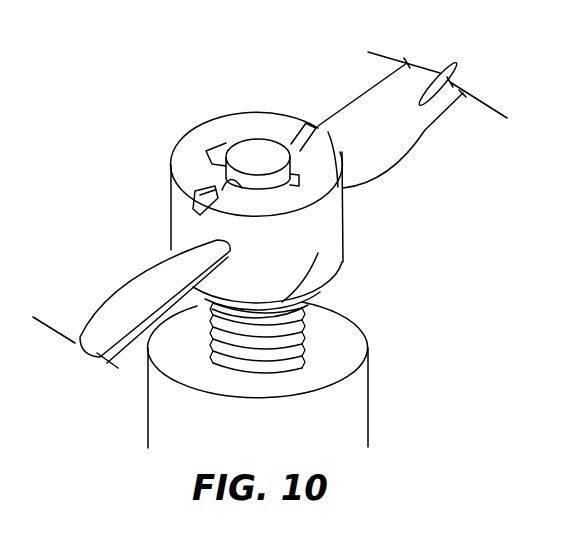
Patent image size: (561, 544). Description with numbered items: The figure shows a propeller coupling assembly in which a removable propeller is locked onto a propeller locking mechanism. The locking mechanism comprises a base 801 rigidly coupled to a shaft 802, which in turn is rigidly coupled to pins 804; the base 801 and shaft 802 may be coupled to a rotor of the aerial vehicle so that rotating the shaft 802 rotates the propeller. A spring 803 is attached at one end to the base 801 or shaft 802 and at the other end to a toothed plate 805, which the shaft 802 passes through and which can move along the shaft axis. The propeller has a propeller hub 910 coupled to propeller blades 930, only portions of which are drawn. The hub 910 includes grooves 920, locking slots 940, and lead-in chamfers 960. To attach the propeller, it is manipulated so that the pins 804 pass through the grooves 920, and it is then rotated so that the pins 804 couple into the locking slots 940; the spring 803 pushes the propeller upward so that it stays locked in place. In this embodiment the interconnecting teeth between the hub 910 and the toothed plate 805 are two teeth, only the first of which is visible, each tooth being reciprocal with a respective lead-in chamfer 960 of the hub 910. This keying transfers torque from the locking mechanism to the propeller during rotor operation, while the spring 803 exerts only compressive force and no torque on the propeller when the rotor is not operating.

The base 801 is at (275, 417).
The shaft 802 is at (257, 152).
The spring 803 is at (300, 320).
The pins 804 is at (295, 143).
The toothed plate 805 is at (320, 282).
The propeller hub 910 is at (320, 228).
The grooves 920 is at (213, 153).
The propeller blades 930 is at (137, 293).
The locking slots 940 is at (305, 127).
The lead-in chamfers 960 is at (320, 257).